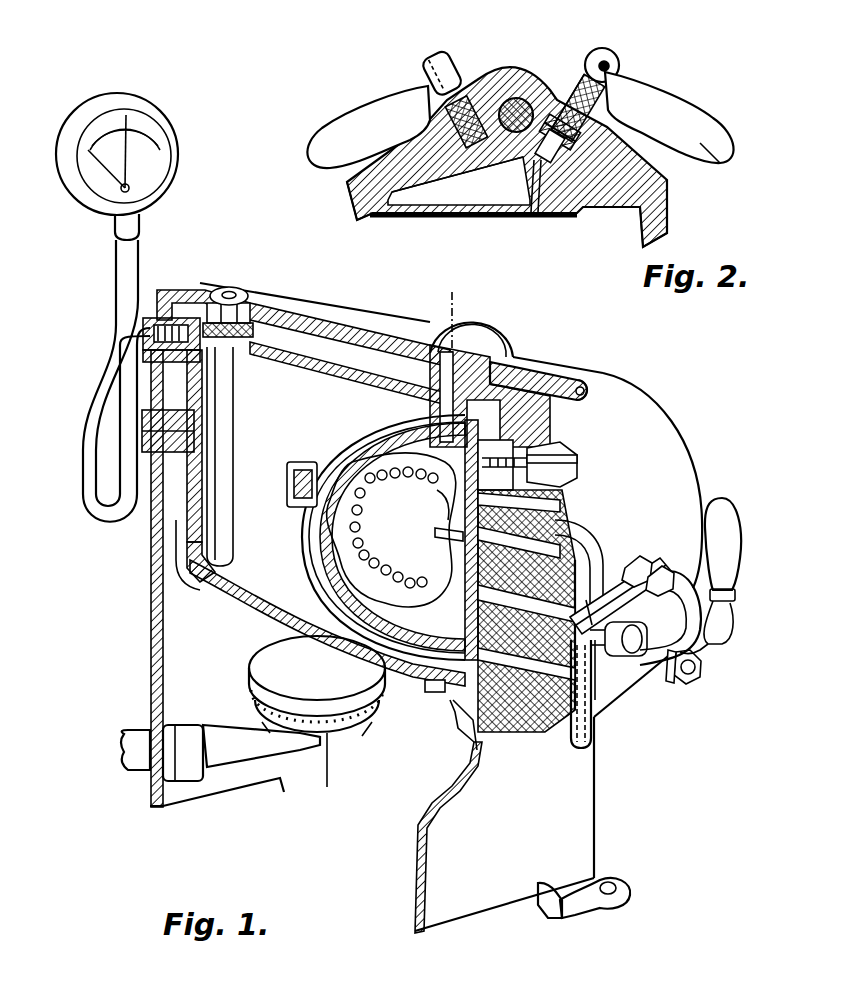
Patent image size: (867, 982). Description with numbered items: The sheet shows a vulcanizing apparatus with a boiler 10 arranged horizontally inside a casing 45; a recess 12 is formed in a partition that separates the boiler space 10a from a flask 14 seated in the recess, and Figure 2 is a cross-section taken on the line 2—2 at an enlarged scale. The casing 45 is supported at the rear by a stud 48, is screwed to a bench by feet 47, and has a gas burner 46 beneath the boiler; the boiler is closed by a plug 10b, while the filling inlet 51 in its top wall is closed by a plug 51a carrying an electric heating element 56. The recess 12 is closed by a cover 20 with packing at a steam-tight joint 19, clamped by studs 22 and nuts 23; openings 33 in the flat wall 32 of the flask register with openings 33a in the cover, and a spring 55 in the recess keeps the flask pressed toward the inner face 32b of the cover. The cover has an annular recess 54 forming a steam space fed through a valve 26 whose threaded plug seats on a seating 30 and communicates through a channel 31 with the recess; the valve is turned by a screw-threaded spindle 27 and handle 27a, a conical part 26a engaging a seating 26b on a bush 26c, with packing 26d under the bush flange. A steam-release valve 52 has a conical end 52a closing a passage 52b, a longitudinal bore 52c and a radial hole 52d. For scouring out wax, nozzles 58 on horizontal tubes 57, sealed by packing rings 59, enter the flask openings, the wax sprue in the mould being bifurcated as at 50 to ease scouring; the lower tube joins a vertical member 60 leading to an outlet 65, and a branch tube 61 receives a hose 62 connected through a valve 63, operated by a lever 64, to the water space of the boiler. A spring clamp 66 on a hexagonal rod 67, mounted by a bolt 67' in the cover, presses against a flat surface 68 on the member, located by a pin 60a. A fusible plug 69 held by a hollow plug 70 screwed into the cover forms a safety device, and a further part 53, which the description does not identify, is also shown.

In FIG. 1, the boiler 10 is at (250, 597).
In FIG. 1, the boiler space 10a is at (300, 356).
In FIG. 2, the boiler space 10a is at (477, 188).
In FIG. 1, the plug 10b is at (185, 512).
In FIG. 1, the recess 12 is at (352, 445).
In FIG. 2, the recess 12 is at (628, 231).
In FIG. 1, the flask 14 is at (370, 421).
In FIG. 1, the steam-tight joint 19 is at (497, 373).
In FIG. 1, the section line 2 is at (451, 354).
In FIG. 1, the cover 20 is at (617, 403).
In FIG. 1, the studs 22 is at (588, 388).
In FIG. 2, the studs 22 is at (518, 90).
In FIG. 1, the nuts 23 is at (586, 384).
In FIG. 2, the valve 26 is at (570, 208).
In FIG. 2, the conical part 26a is at (618, 133).
In FIG. 2, the seating 26b is at (603, 127).
In FIG. 2, the bush 26c is at (604, 47).
In FIG. 2, the packing 26d is at (563, 105).
In FIG. 2, the screw-threaded spindle 27 is at (624, 74).
In FIG. 2, the handle 27a is at (710, 152).
In FIG. 2, the seating 30 is at (541, 163).
In FIG. 2, the channel 31 is at (545, 214).
In FIG. 1, the flat wall 32 is at (495, 465).
In FIG. 1, the inner face 32b is at (462, 588).
In FIG. 1, the openings 33 is at (465, 548).
In FIG. 1, the openings 33a is at (550, 522).
In FIG. 1, the casing 45 is at (150, 598).
In FIG. 1, the gas burner 46 is at (268, 680).
In FIG. 1, the feet 47 is at (618, 886).
In FIG. 1, the stud 48 is at (145, 440).
In FIG. 1, the bifurcated sprue 50 is at (440, 499).
In FIG. 1, the inlet 51 is at (215, 292).
In FIG. 1, the plug 51a is at (247, 297).
In FIG. 2, the valve 52 is at (447, 98).
In FIG. 2, the conical end 52a is at (346, 187).
In FIG. 2, the passage 52b is at (478, 158).
In FIG. 2, the longitudinal bore 52c is at (420, 123).
In FIG. 2, the radial hole 52d is at (480, 108).
In FIG. 1, the pressure gauge 53 is at (178, 177).
In FIG. 1, the annular recess 54 is at (560, 492).
In FIG. 1, the spring 55 is at (298, 460).
In FIG. 1, the electric heating element 56 is at (233, 424).
In FIG. 1, the horizontal tubes 57 is at (562, 546).
In FIG. 1, the nozzles 58 is at (435, 533).
In FIG. 1, the packing rings 59 is at (510, 517).
In FIG. 1, the vertical member 60 is at (602, 585).
In FIG. 1, the pin 60a is at (621, 595).
In FIG. 1, the branch tube 61 is at (592, 650).
In FIG. 1, the hose 62 is at (641, 637).
In FIG. 1, the valve 63 is at (715, 633).
In FIG. 1, the lever 64 is at (723, 520).
In FIG. 1, the outlet 65 is at (594, 740).
In FIG. 1, the spring clamp 66 is at (592, 597).
In FIG. 1, the hexagonal rod 67 is at (637, 550).
In FIG. 1, the bolt 67' is at (663, 556).
In FIG. 1, the flat surface 68 is at (552, 447).
In FIG. 1, the fusible plug 69 is at (573, 451).
In FIG. 1, the hollow plug 70 is at (575, 473).